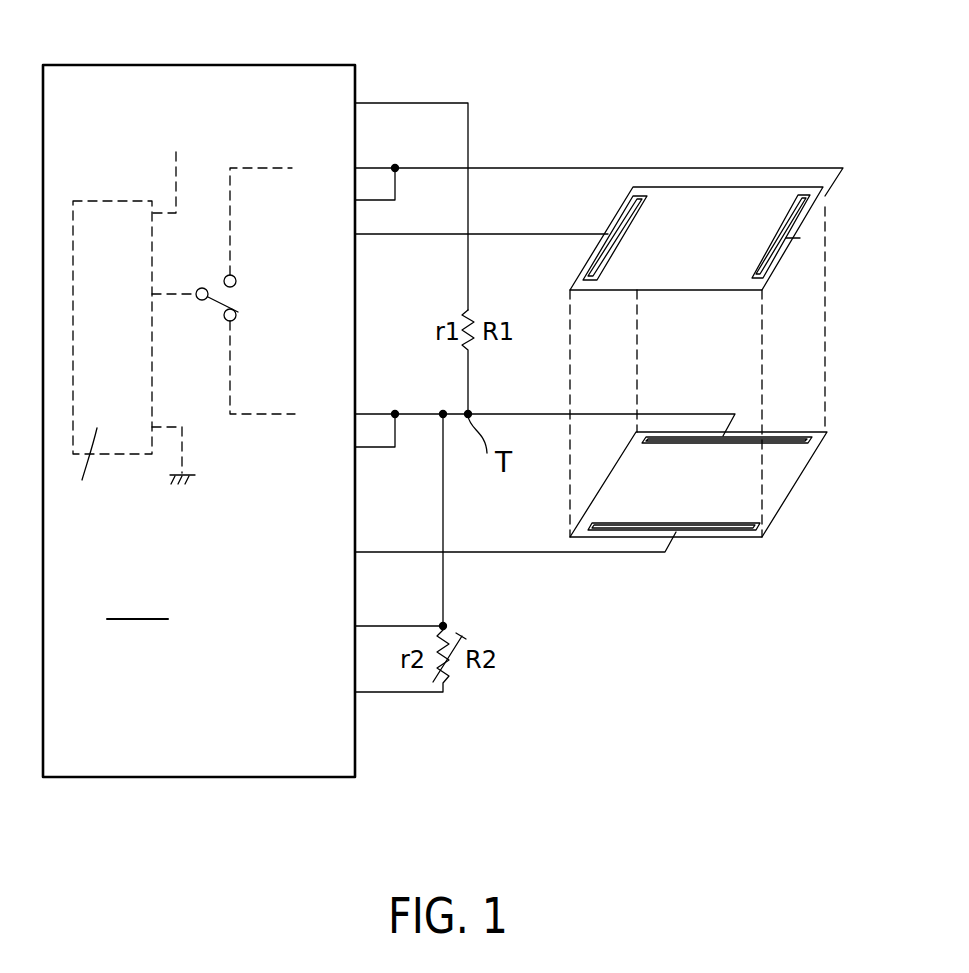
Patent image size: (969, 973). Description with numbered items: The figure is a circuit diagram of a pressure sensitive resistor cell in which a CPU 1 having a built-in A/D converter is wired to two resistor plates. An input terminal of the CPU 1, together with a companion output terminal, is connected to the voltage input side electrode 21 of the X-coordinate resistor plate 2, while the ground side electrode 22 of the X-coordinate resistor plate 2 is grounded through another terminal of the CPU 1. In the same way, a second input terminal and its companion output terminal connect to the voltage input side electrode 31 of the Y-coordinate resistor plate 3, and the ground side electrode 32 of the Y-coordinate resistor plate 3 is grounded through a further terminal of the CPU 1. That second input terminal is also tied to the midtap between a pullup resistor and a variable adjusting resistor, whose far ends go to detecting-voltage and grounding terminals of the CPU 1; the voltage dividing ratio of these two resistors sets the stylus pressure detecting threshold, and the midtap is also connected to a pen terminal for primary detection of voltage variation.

The CPU 1 is at (197, 97).
The X-coordinate resistor plate 2 is at (746, 206).
The voltage input side electrode 21 is at (773, 258).
The ground side electrode 22 is at (628, 216).
The Y-coordinate resistor plate 3 is at (782, 482).
The voltage input side electrode 31 is at (790, 434).
The ground side electrode 32 is at (708, 528).